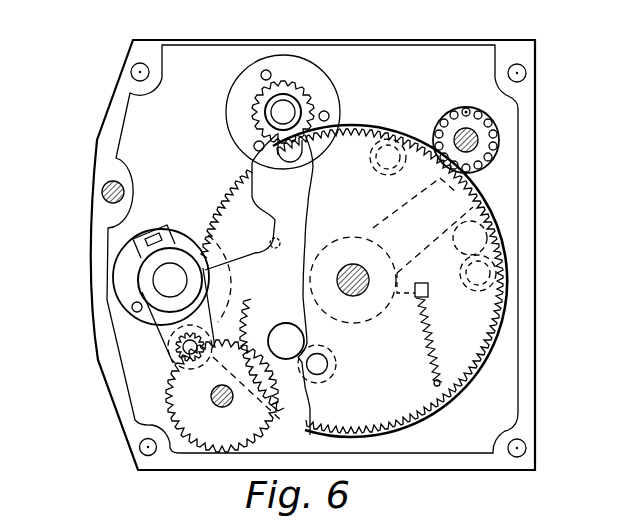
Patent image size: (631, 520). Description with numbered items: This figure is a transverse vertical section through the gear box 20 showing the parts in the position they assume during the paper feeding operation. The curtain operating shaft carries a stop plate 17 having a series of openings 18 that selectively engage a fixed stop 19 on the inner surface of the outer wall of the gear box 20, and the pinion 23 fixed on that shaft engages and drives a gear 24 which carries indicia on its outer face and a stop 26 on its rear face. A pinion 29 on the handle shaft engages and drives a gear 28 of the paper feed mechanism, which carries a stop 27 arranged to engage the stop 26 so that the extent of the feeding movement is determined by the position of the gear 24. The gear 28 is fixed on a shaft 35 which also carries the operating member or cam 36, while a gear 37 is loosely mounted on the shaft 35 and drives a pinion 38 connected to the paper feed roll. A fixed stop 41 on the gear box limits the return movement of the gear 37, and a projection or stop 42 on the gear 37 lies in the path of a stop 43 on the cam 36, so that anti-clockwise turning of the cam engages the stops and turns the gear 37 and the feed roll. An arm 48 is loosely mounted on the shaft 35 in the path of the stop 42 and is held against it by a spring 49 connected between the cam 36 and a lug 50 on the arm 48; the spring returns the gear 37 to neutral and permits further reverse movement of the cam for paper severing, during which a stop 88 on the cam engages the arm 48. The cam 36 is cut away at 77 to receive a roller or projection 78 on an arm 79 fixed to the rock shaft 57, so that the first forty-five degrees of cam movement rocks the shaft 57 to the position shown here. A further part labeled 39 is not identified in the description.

The stop plate 17 is at (496, 123).
The openings 18 is at (496, 145).
The fixed stop 19 is at (466, 109).
The gear box 20 is at (112, 375).
The pinion 23 is at (499, 162).
The gear 24 is at (317, 409).
The stop or projection 26 is at (323, 377).
The stop 27 is at (284, 340).
The gear 28 is at (240, 296).
The pinion 29 is at (187, 387).
The shaft 35 is at (356, 265).
The operating member or cam 36 is at (252, 173).
The gear 37 is at (242, 193).
The pinion 38 is at (303, 93).
The disc 39 is at (242, 85).
The fixed stop 41 is at (390, 140).
The projection or stop 42 is at (488, 236).
The stop or projection 43 is at (497, 273).
The arm 48 is at (478, 193).
The spring 49 is at (427, 333).
The lug 50 is at (421, 284).
The rock shaft 57 is at (172, 280).
The cut-away 77 is at (272, 222).
The roller or projection 78 is at (168, 347).
The arm 79 is at (167, 323).
The stop 88 is at (271, 242).